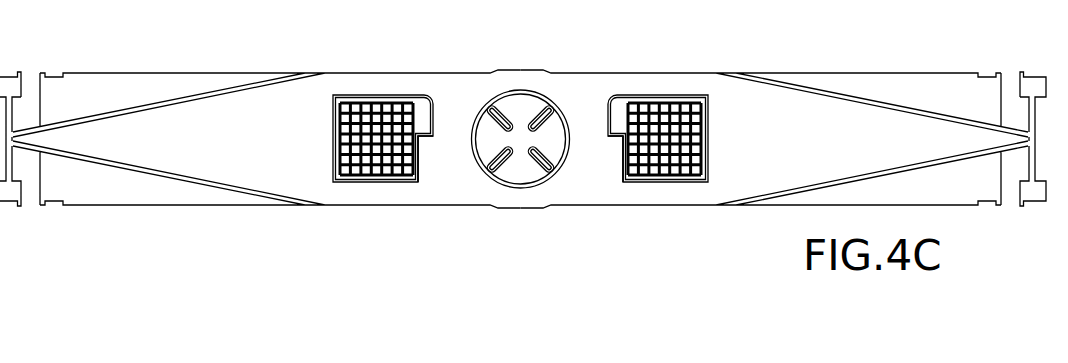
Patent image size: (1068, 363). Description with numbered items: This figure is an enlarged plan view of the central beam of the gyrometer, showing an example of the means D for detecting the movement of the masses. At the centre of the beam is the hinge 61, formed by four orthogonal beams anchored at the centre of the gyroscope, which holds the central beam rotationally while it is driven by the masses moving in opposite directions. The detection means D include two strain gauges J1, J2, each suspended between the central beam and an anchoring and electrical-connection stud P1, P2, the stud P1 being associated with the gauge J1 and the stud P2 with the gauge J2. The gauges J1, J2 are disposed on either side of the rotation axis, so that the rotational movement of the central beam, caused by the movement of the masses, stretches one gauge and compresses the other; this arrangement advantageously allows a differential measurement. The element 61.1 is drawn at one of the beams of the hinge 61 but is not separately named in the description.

The anchoring and electrical-connection stud P2 is at (373, 125).
The anchoring and electrical-connection stud P1 is at (675, 126).
The hinge 61 is at (518, 112).
The spoke slot 61.1 is at (560, 101).
The strain gauge J1 is at (621, 133).
The strain gauge J2 is at (433, 140).
The means for detecting the movement of the masses D is at (421, 142).